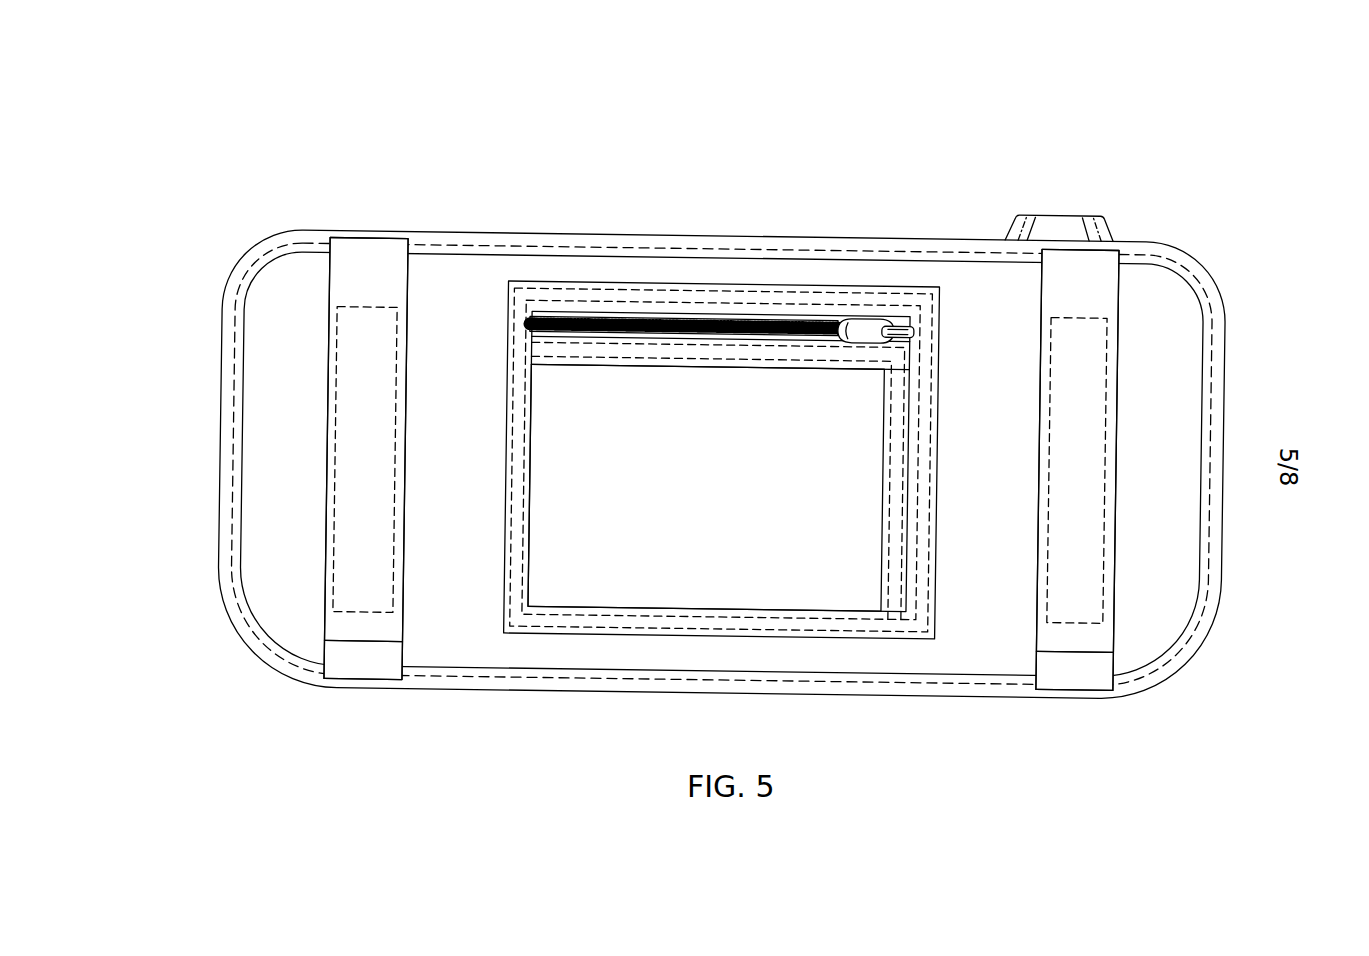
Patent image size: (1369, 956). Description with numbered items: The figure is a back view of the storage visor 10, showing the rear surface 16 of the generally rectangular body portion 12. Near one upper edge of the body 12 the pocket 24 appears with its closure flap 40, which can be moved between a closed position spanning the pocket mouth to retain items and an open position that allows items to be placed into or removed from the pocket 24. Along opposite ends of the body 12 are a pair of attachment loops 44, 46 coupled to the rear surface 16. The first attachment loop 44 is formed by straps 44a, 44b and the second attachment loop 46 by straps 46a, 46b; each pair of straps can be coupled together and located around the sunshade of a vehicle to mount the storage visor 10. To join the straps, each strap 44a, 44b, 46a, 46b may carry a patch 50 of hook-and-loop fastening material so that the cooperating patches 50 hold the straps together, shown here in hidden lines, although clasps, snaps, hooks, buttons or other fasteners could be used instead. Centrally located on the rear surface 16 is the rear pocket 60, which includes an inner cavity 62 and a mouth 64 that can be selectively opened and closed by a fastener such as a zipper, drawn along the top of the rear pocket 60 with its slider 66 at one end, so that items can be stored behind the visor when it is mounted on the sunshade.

The storage visor 10 is at (708, 157).
The body portion 12 is at (1183, 325).
The rear surface 16 is at (966, 278).
The pocket 24 is at (1063, 225).
The closure flap 40 is at (1042, 225).
The attachment loop 44 is at (291, 469).
The strap 44a is at (370, 267).
The strap 44b is at (358, 663).
The attachment loop 46 is at (1197, 484).
The strap 46a is at (1108, 280).
The strap 46b is at (1077, 677).
The patch of hook-and-loop fastening material 50 is at (353, 415).
The rear pocket 60 is at (665, 563).
The inner cavity 62 is at (805, 553).
The mouth 64 is at (712, 318).
The zipper slider 66 is at (850, 328).